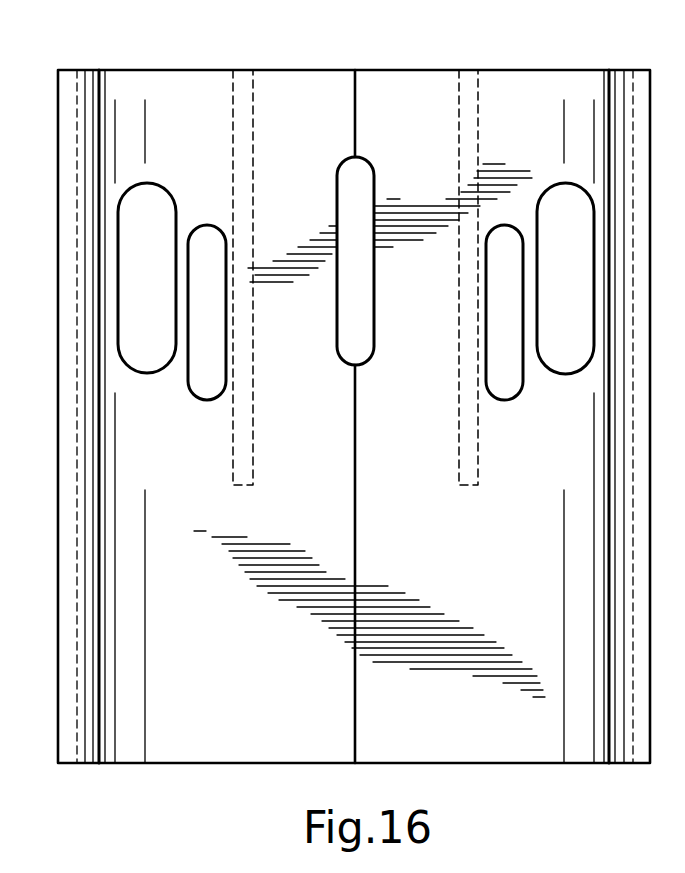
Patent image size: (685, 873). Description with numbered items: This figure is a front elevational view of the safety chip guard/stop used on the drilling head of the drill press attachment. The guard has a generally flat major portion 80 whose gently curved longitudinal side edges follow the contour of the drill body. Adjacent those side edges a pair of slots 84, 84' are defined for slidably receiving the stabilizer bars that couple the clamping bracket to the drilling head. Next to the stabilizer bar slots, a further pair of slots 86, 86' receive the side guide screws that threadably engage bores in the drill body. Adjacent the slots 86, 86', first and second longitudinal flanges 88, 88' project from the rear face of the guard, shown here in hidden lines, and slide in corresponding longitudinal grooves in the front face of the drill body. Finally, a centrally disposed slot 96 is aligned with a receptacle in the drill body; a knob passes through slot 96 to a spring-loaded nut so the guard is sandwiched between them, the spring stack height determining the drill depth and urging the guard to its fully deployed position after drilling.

The major portion 80 is at (449, 521).
The stabilizer bar slot 84 is at (154, 239).
The stabilizer bar slot 84' is at (549, 239).
The side guide screw slot 86 is at (194, 357).
The side guide screw slot 86' is at (507, 347).
The first longitudinal flange 88 is at (291, 260).
The second longitudinal flange 88' is at (483, 255).
The centrally disposed slot 96 is at (337, 280).